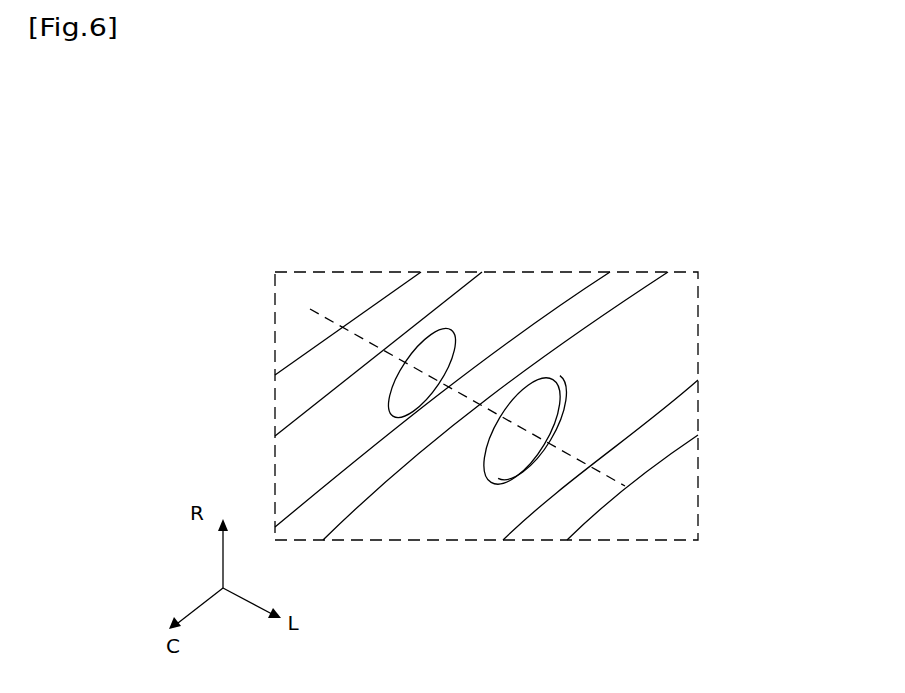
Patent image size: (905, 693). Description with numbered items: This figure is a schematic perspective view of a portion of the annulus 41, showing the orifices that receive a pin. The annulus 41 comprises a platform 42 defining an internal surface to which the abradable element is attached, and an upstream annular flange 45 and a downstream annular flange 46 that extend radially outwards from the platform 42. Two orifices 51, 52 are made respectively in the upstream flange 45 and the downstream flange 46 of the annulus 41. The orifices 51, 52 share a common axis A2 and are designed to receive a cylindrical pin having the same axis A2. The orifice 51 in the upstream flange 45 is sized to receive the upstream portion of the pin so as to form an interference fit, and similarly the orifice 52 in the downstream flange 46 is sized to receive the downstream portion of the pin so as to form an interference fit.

The annulus 41 is at (588, 217).
The platform 42 is at (632, 522).
The upstream annular flange 45 is at (431, 283).
The downstream annular flange 46 is at (622, 286).
The orifice 51 is at (443, 340).
The orifice 52 is at (527, 408).
The axis A2 is at (310, 309).